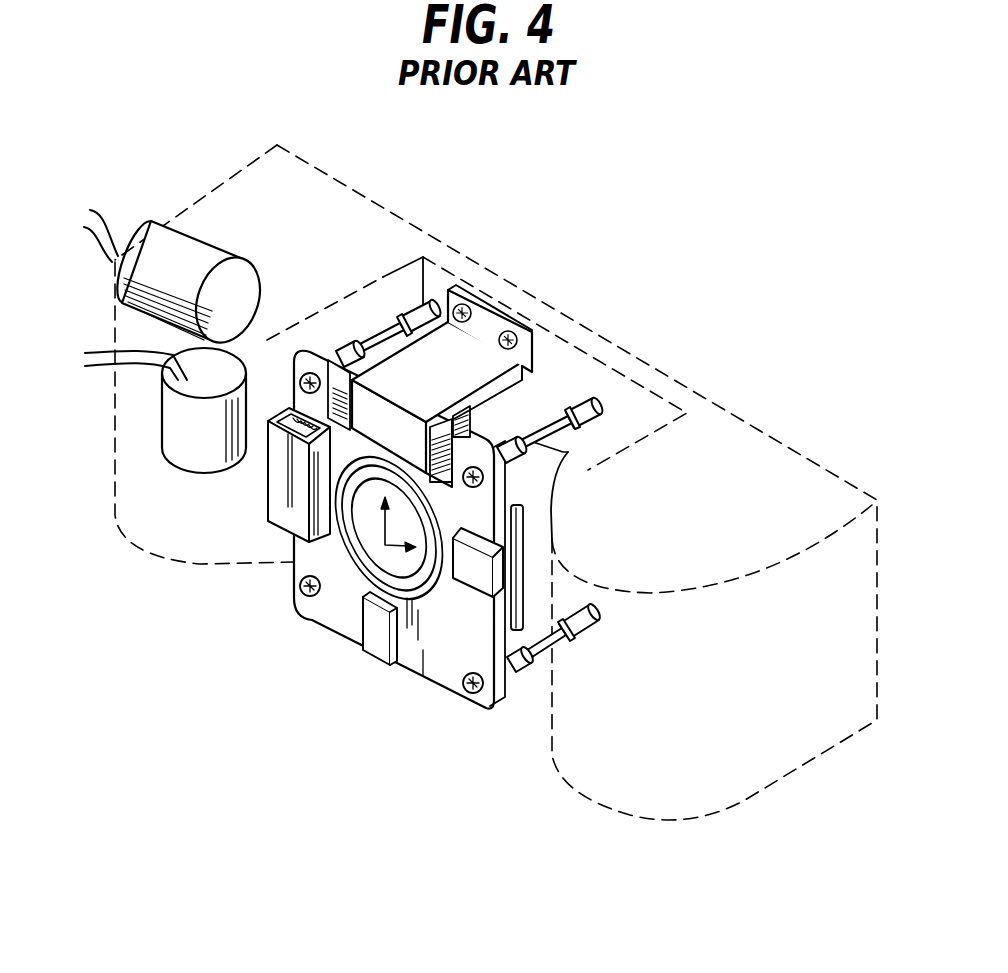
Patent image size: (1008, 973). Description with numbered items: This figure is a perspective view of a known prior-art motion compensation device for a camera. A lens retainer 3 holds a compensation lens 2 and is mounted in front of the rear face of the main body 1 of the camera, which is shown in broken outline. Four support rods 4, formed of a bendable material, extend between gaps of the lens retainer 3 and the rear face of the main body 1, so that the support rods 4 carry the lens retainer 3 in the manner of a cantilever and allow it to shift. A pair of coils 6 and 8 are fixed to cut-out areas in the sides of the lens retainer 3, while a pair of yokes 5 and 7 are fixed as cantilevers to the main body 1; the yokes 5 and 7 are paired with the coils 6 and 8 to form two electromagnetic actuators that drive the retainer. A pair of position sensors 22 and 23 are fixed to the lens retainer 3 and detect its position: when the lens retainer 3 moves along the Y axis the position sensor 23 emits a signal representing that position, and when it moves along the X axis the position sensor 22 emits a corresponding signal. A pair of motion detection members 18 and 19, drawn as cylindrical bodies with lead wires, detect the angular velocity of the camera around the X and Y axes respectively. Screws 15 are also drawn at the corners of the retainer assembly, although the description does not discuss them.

The main body 1 is at (753, 465).
The compensation lens 2 is at (373, 535).
The lens retainer 3 is at (440, 668).
The support rods 4 is at (388, 333).
The yoke 5 is at (465, 368).
The coil 6 is at (480, 422).
The yoke 7 is at (296, 498).
The coil 8 is at (290, 418).
The screw 15 is at (310, 375).
The motion detection member 18 is at (168, 247).
The motion detection member 19 is at (192, 425).
The position sensor 22 is at (373, 627).
The position sensor 23 is at (500, 576).